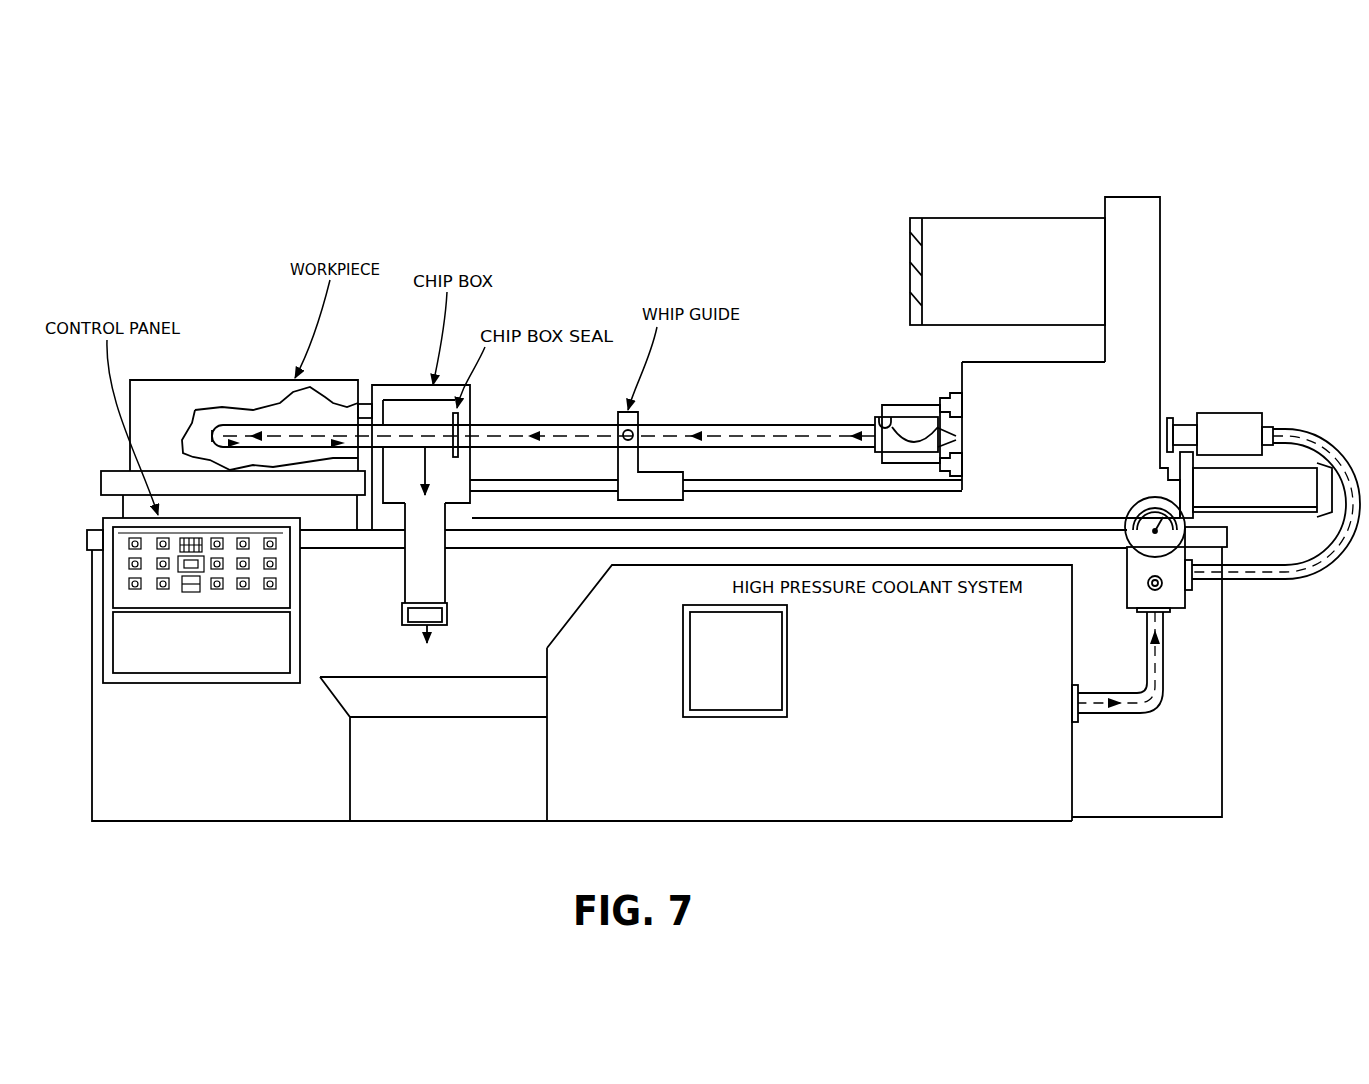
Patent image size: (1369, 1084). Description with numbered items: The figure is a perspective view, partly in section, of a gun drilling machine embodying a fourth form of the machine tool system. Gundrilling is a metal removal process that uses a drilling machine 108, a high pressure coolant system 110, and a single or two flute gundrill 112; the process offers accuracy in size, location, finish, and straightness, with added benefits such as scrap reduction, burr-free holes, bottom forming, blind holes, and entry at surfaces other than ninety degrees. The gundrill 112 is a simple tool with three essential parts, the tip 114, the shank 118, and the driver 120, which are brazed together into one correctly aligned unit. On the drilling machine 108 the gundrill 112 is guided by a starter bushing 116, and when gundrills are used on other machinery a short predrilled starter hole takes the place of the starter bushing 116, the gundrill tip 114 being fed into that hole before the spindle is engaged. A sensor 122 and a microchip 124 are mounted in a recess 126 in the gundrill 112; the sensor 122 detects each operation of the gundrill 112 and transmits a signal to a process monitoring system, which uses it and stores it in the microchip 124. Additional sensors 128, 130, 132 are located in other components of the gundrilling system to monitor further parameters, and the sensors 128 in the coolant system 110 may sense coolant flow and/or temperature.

The drilling machine 108 is at (843, 186).
The high pressure coolant system 110 is at (950, 812).
The gundrill 112 is at (709, 418).
The gundrill tip 114 is at (229, 433).
The starter bushing 116 is at (365, 402).
The shank 118 is at (555, 422).
The driver 120 is at (921, 425).
The sensor 122 is at (878, 411).
The microchip 124 is at (884, 417).
The recess 126 is at (953, 434).
The sensor 128 is at (1125, 515).
The sensor 130 is at (1068, 467).
The sensor 132 is at (1115, 205).